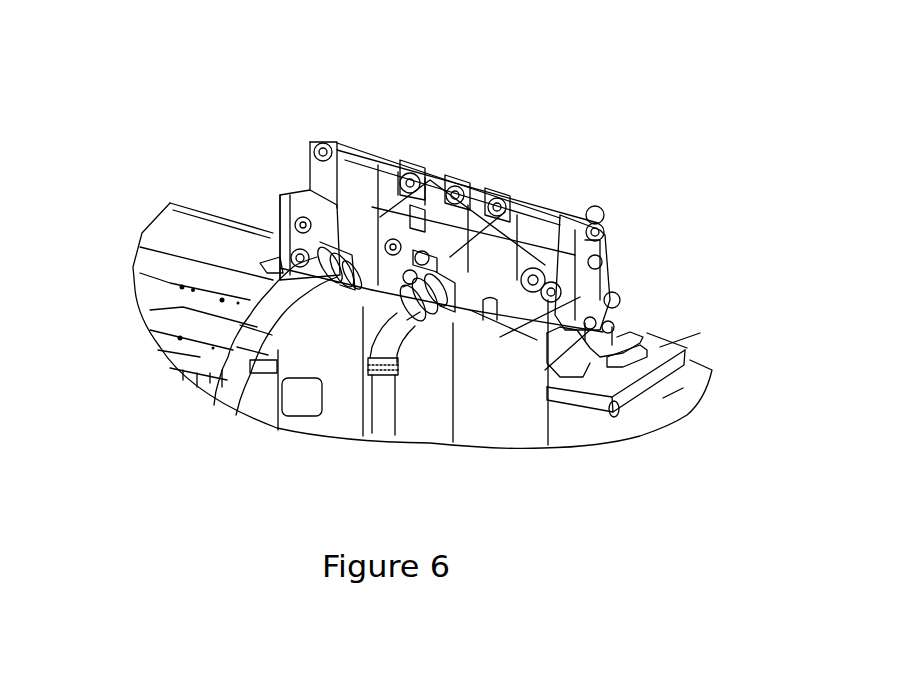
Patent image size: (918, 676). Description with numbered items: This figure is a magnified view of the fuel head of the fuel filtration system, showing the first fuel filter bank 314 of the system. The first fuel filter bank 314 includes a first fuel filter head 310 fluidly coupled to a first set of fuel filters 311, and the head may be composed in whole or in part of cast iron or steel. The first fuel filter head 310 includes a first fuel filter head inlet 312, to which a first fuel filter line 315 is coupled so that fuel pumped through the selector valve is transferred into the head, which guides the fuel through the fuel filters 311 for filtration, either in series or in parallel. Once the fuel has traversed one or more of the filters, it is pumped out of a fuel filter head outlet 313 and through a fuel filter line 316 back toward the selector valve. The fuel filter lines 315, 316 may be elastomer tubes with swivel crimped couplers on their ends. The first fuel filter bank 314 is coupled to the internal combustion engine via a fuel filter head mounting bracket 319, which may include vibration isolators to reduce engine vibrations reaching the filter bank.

The first fuel filter head 310 is at (360, 177).
The first set of fuel filters 311 is at (340, 412).
The first fuel filter head inlet 312 is at (442, 290).
The fuel filter head outlet 313 is at (332, 250).
The first fuel filter bank 314 is at (575, 183).
The first fuel filter line 315 is at (378, 418).
The fuel filter line 316 is at (230, 382).
The fuel filter head mounting bracket 319 is at (660, 350).